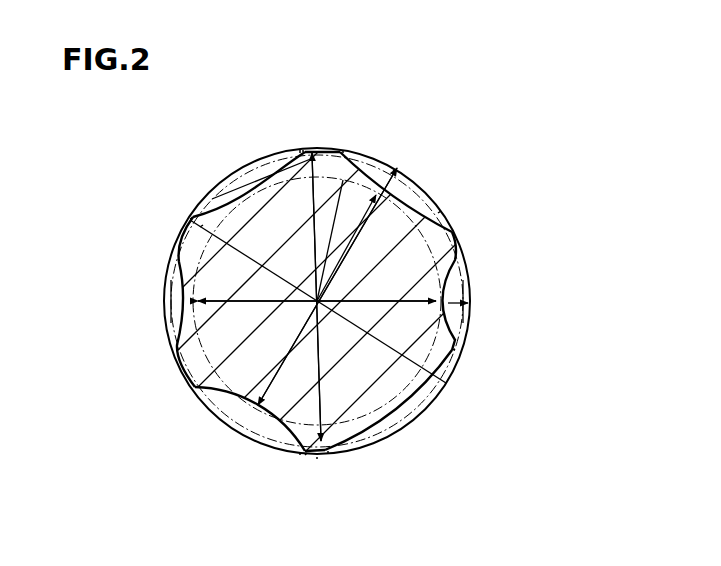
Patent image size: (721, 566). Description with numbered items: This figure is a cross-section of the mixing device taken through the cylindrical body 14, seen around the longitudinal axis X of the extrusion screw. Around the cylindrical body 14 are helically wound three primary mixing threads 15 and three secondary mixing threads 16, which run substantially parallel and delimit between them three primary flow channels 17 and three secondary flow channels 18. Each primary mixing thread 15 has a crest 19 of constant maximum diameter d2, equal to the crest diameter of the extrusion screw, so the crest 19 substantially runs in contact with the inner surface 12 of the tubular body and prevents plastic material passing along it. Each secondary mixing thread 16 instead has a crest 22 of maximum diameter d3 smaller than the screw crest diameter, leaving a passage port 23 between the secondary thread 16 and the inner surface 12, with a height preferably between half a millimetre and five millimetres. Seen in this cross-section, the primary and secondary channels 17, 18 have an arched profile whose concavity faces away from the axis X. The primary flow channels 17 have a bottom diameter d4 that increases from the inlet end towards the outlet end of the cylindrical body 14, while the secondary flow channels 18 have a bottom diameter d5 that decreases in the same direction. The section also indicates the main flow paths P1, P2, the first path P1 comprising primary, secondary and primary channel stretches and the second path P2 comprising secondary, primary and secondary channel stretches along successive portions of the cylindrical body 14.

The inner surface of the tubular body 12 is at (447, 348).
The cylindrical body 14 is at (308, 261).
The primary mixing thread 15 is at (313, 150).
The secondary mixing thread 16 is at (186, 242).
The primary flow channel 17 is at (246, 200).
The secondary flow channel 18 is at (378, 172).
The crest of the primary mixing thread 19 is at (306, 150).
The crest of the secondary mixing thread 22 is at (200, 226).
The passage port 23 is at (440, 213).
The maximum diameter of the primary thread crest d2 is at (453, 373).
The maximum diameter of the secondary thread crest d3 is at (322, 407).
The bottom diameter of the primary flow channel d4 is at (400, 175).
The bottom diameter of the secondary flow channel d5 is at (340, 165).
The first path P1 is at (452, 270).
The second path P2 is at (398, 412).
The longitudinal axis X is at (182, 277).